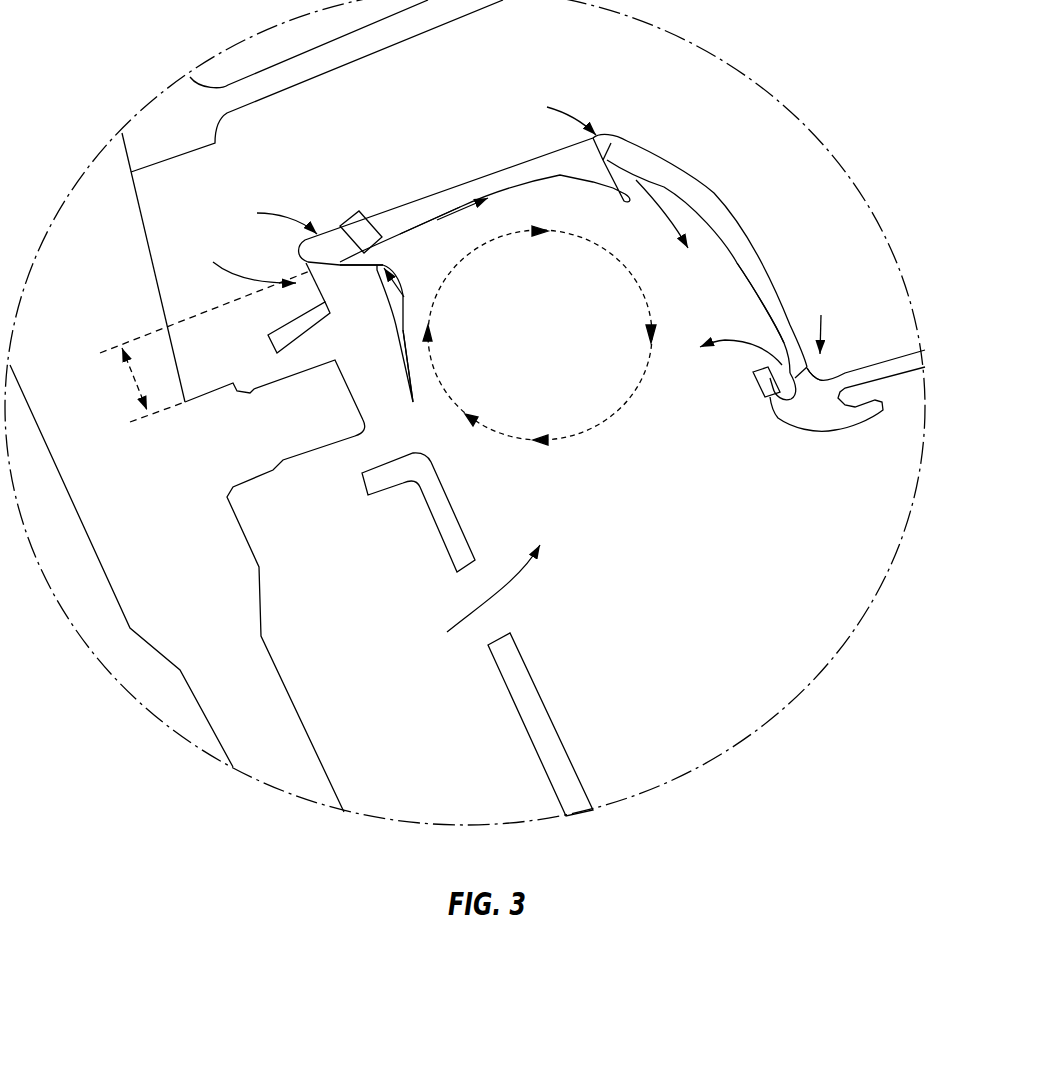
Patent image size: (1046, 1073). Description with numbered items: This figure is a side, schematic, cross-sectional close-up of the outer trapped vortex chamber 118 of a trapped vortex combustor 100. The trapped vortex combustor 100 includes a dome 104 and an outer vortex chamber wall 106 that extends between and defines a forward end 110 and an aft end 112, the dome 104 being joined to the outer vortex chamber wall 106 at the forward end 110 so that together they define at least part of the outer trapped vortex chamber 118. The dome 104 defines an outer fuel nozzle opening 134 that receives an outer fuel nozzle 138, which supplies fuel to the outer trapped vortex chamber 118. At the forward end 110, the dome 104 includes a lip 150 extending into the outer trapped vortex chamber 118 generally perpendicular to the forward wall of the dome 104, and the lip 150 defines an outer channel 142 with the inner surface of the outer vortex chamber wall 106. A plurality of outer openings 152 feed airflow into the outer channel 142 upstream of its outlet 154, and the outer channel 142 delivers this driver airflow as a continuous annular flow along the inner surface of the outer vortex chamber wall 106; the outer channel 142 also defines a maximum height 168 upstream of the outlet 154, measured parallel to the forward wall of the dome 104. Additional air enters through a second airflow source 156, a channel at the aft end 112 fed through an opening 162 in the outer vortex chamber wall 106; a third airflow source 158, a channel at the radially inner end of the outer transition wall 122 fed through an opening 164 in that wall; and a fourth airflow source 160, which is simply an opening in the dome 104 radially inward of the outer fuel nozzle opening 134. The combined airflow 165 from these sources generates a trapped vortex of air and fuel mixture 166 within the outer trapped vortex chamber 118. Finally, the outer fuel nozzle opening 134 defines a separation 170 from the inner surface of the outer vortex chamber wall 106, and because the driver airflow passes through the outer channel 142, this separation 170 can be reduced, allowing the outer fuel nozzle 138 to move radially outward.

The trapped vortex combustor 100 is at (817, 98).
The dome 104 is at (325, 302).
The outer vortex chamber wall 106 is at (470, 178).
The forward end 110 is at (383, 316).
The aft end 112 is at (555, 150).
The outer trapped vortex chamber 118 is at (520, 347).
The outer transition wall 122 is at (752, 253).
The outer fuel nozzle opening 134 is at (420, 442).
The outer fuel nozzle 138 is at (271, 419).
The outer channel 142 is at (354, 268).
The lip 150 is at (412, 403).
The outer openings 152 is at (302, 246).
The outlet 154 is at (380, 240).
The second airflow source 156 is at (653, 151).
The third airflow source 158 is at (772, 412).
The fourth airflow source 160 is at (523, 615).
The opening 162 is at (614, 141).
The opening 164 is at (806, 384).
The airflow 165 is at (257, 213).
The trapped vortex of air and fuel mixture 166 is at (597, 420).
The maximum height 168 is at (400, 292).
The separation 170 is at (132, 380).